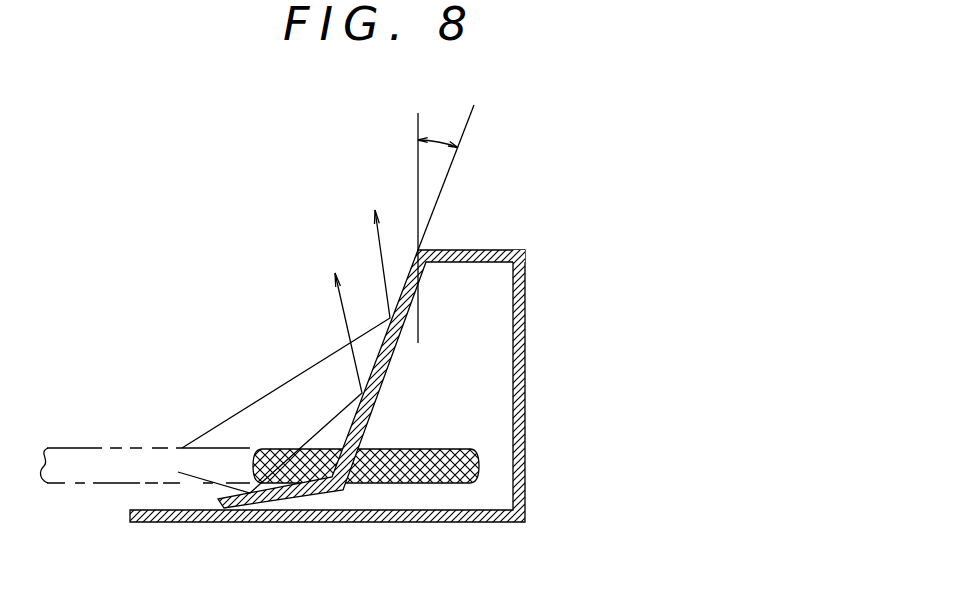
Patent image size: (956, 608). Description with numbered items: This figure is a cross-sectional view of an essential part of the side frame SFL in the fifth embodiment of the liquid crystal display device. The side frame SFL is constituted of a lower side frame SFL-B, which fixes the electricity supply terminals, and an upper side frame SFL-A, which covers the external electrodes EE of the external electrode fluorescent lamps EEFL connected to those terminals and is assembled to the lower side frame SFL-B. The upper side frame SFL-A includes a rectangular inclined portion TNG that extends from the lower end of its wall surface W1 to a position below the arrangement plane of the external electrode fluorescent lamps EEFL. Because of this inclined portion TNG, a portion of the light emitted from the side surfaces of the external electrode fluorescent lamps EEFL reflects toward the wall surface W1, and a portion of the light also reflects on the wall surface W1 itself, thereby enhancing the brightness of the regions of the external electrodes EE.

The external electrode fluorescent lamp EEFL is at (152, 474).
The external electrode EE is at (432, 487).
The side frame SFL is at (651, 210).
The upper side frame SFL-A is at (497, 249).
The lower side frame SFL-B is at (527, 338).
The inclined portion TNG is at (285, 492).
The wall surface W1 is at (410, 262).